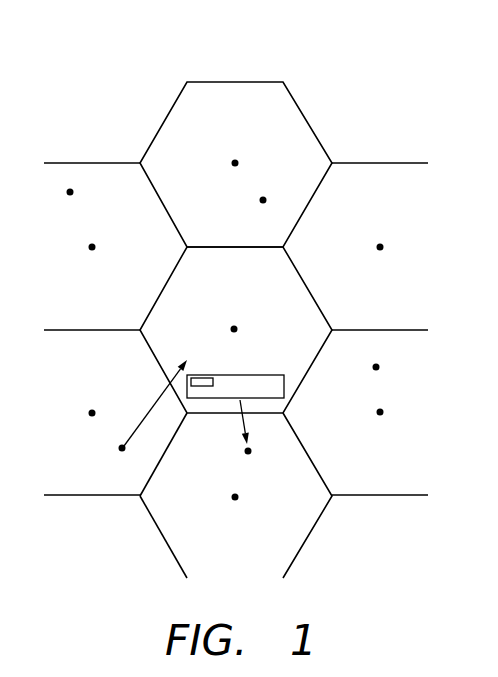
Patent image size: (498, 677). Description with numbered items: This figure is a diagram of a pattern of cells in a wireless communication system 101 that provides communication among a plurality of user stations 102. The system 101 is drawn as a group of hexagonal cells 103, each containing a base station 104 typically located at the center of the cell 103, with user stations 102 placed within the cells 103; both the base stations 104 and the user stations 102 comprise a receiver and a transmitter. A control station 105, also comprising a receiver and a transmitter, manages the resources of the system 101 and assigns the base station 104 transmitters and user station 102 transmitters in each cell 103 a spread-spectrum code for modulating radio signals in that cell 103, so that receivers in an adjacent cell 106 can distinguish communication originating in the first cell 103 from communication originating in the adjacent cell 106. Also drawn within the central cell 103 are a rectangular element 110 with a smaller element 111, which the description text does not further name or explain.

The wireless communication system 101 is at (318, 64).
The user station 102 is at (263, 197).
The cell 103 is at (278, 117).
The base station 104 is at (235, 160).
The control station 105 is at (70, 189).
The adjacent cell 106 is at (185, 540).
The mobile terminal device 110 is at (262, 375).
The display / indicator 111 is at (202, 378).